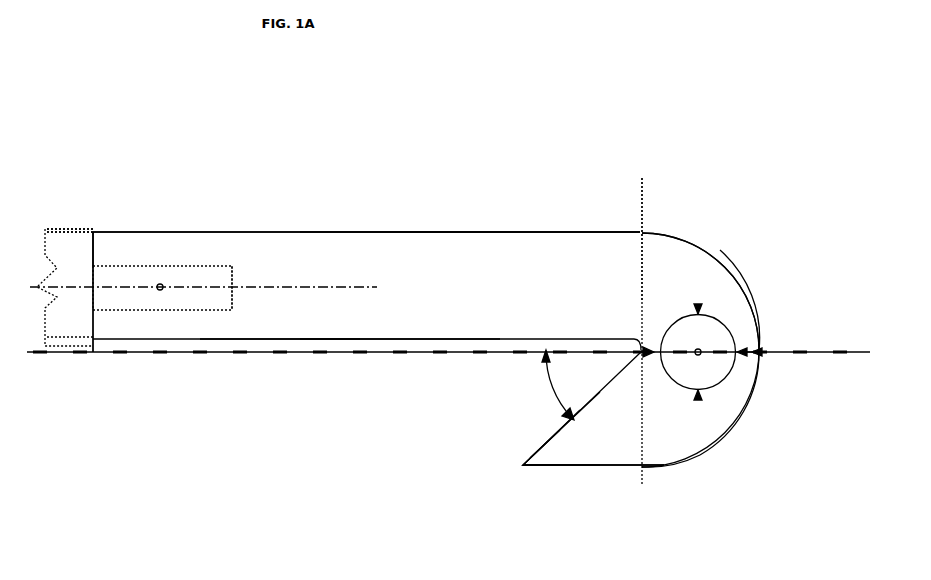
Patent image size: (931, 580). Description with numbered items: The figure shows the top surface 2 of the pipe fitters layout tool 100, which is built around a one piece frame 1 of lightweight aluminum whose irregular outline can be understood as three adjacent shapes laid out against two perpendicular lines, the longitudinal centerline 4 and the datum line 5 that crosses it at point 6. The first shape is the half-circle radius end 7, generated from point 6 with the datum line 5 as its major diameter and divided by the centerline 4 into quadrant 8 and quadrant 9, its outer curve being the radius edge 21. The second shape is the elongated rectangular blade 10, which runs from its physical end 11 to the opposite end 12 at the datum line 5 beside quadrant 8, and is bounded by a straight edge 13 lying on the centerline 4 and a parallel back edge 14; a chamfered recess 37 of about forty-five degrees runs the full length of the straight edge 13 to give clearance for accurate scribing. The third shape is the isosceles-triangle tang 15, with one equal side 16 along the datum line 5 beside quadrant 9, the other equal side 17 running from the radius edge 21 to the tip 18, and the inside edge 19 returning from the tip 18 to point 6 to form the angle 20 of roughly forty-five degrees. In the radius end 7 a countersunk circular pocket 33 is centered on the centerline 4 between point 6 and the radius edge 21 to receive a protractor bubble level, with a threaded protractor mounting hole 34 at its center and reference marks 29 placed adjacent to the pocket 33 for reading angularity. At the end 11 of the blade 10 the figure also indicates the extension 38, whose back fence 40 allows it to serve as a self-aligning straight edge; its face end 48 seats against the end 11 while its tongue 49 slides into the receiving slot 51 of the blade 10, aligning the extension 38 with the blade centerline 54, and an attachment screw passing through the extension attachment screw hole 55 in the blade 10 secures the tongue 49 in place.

The tool 100 is at (237, 150).
The one piece frame 1 is at (325, 168).
The top surface 2 is at (510, 267).
The longitudinal centerline 4 is at (845, 357).
The datum line 5 is at (645, 190).
The point 6 is at (648, 345).
The radius end 7 is at (770, 267).
The quadrant 8 is at (743, 323).
The quadrant 9 is at (718, 418).
The blade 10 is at (453, 227).
The end 11 is at (93, 317).
The opposite end 12 is at (622, 277).
The straight edge 13 is at (400, 352).
The back edge 14 is at (383, 232).
The tang 15 is at (598, 455).
The side 16 is at (640, 418).
The side 17 is at (563, 468).
The tip 18 is at (523, 465).
The inside edge 19 is at (545, 440).
The angle 20 is at (545, 380).
The radius edge 21 is at (760, 372).
The reference marks 29 is at (660, 343).
The pocket 33 is at (682, 390).
The protractor mounting hole 34 is at (700, 355).
The chamfered recess 37 is at (278, 343).
The extension 38 is at (72, 257).
The back fence 40 is at (80, 230).
The face end 48 is at (93, 245).
The tongue 49 is at (208, 267).
The receiving slot 51 is at (210, 290).
The centerline 54 is at (277, 287).
The extension attachment screw hole 55 is at (160, 284).